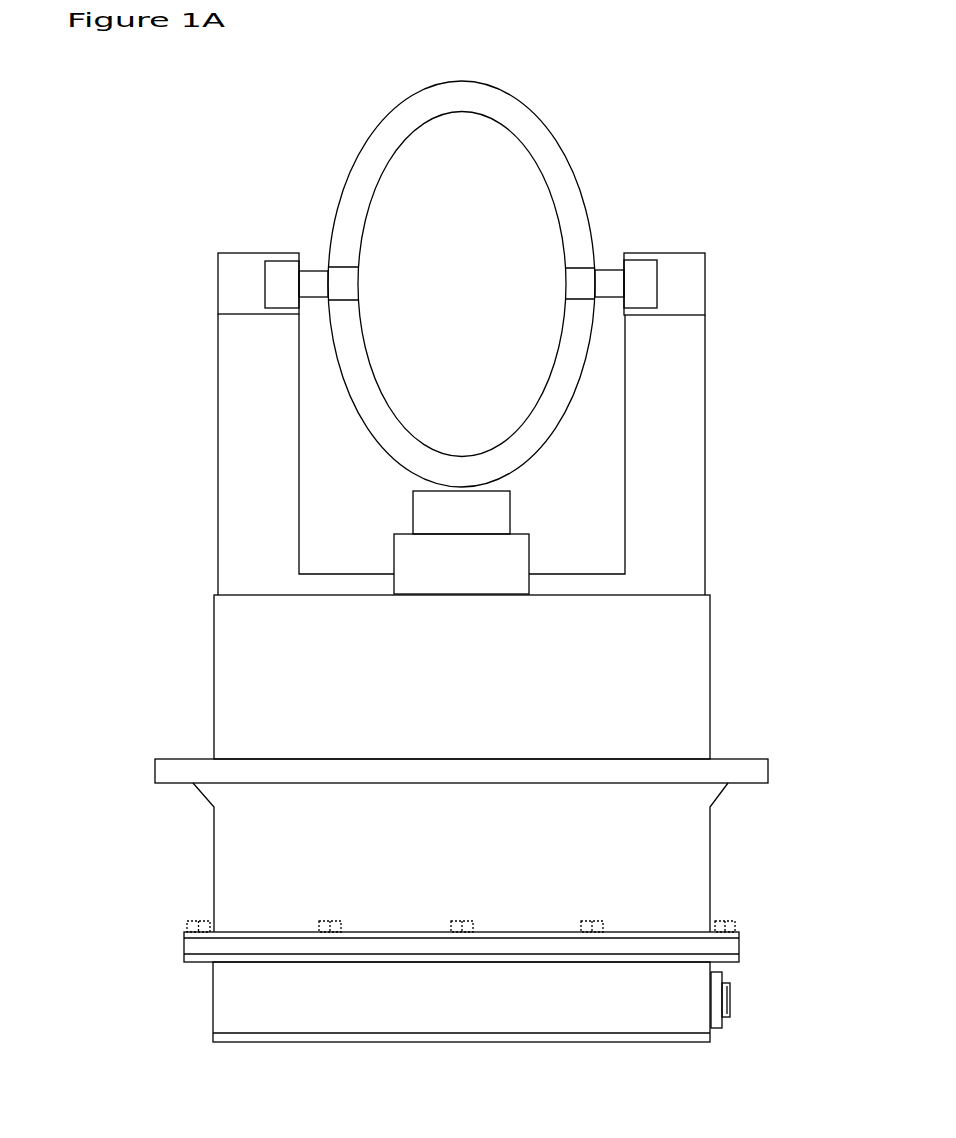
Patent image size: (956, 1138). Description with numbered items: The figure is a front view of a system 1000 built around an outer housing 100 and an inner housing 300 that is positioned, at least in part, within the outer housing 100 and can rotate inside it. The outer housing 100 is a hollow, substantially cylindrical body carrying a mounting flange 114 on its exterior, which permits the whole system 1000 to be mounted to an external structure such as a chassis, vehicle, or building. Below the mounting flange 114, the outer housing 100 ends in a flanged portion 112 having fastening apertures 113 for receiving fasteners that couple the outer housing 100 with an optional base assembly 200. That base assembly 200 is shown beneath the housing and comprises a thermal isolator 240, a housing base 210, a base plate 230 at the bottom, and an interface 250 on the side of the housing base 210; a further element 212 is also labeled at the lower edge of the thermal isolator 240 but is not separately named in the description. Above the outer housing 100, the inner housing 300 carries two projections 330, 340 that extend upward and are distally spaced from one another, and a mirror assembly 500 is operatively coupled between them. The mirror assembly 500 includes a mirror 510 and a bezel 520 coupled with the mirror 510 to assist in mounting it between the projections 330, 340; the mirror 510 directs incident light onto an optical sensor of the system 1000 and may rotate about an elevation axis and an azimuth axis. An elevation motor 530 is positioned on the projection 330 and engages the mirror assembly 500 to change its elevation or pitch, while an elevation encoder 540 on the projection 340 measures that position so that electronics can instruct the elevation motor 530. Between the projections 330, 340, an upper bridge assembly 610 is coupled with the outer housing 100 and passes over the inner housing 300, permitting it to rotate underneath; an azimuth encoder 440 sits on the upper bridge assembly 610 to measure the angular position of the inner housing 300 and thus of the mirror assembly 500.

The system 1000 is at (673, 143).
The mirror assembly 500 is at (486, 266).
The bezel 520 is at (502, 108).
The mirror 510 is at (515, 167).
The elevation motor 530 is at (238, 268).
The elevation encoder 540 is at (687, 267).
The inner housing 300 is at (414, 454).
The projection 330 is at (281, 379).
The projection 340 is at (689, 379).
The azimuth encoder 440 is at (480, 524).
The upper bridge assembly 610 is at (480, 577).
The outer housing 100 is at (480, 688).
The mounting flange 114 is at (178, 755).
The flanged portion 112 is at (242, 928).
The fastening apertures 113 is at (192, 926).
The base assembly 200 is at (421, 990).
The thermal isolator 240 is at (184, 947).
The plate lower layer 212 is at (188, 965).
The housing base 210 is at (213, 1002).
The base plate 230 is at (213, 1037).
The interface 250 is at (730, 1005).